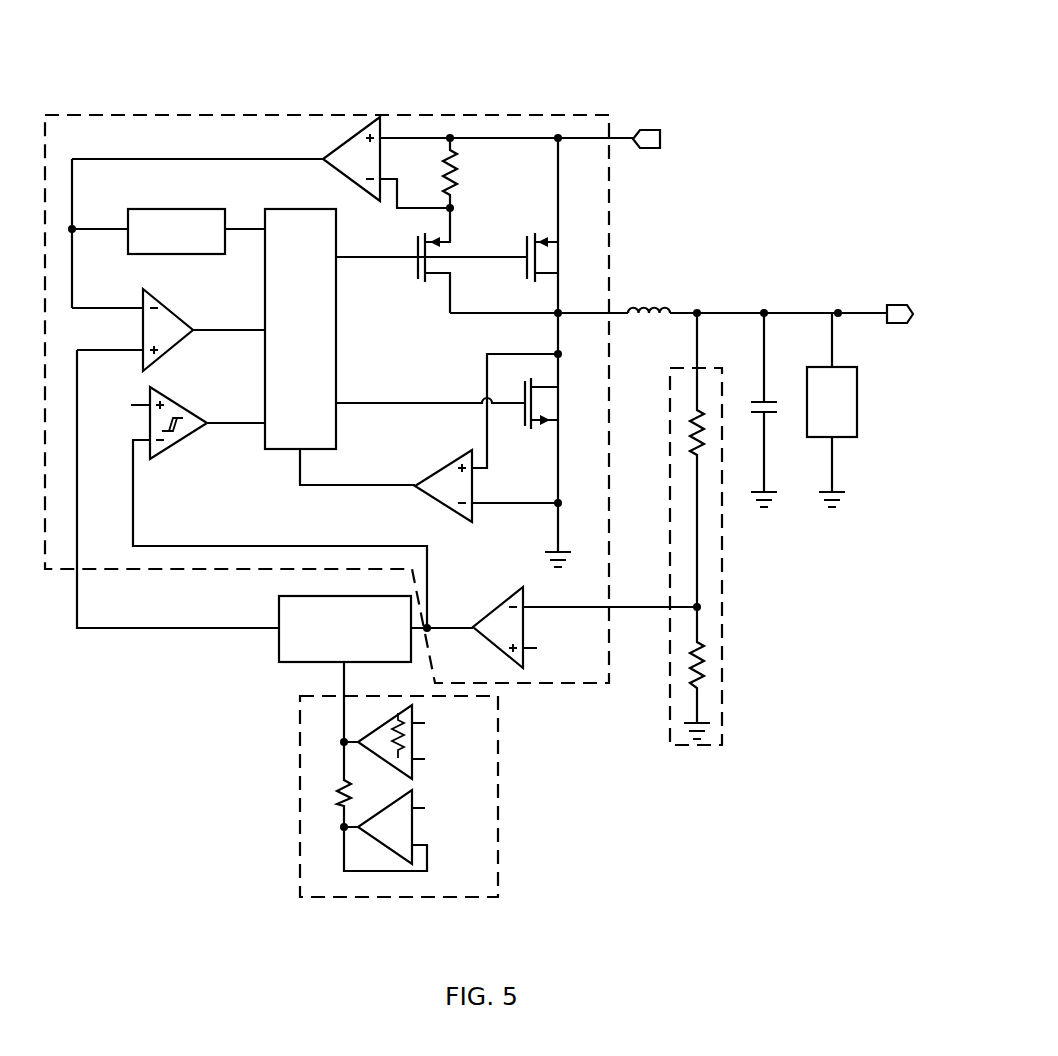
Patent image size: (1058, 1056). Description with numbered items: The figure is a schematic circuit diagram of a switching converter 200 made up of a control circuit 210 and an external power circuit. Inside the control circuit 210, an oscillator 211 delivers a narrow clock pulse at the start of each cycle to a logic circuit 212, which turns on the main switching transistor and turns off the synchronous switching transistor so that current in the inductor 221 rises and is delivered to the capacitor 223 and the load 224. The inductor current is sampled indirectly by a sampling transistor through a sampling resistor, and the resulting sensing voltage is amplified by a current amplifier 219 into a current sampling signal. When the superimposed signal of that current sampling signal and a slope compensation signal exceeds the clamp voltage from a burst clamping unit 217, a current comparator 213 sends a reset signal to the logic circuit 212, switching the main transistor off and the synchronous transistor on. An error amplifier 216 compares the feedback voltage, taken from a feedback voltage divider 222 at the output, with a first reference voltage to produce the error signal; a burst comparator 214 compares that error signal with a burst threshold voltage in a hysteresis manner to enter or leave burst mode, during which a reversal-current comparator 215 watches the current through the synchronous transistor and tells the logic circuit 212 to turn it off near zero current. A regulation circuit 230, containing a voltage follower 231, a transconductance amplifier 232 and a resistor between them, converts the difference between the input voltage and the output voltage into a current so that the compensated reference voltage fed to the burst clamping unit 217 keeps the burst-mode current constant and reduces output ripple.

The switching converter 200 is at (782, 146).
The control circuit 210 is at (470, 108).
The oscillator 211 is at (160, 209).
The logic circuit 212 is at (287, 360).
The current comparator 213 is at (160, 303).
The burst comparator 214 is at (180, 406).
The reversal-current comparator 215 is at (446, 466).
The error amplifier 216 is at (505, 601).
The burst clamping unit 217 is at (279, 607).
The current amplifier 219 is at (345, 143).
The inductor 221 is at (654, 288).
The feedback voltage divider 222 is at (732, 590).
The capacitor 223 is at (778, 393).
The load 224 is at (864, 400).
The regulation circuit 230 is at (300, 757).
The voltage follower 231 is at (402, 797).
The transconductance amplifier 232 is at (395, 717).